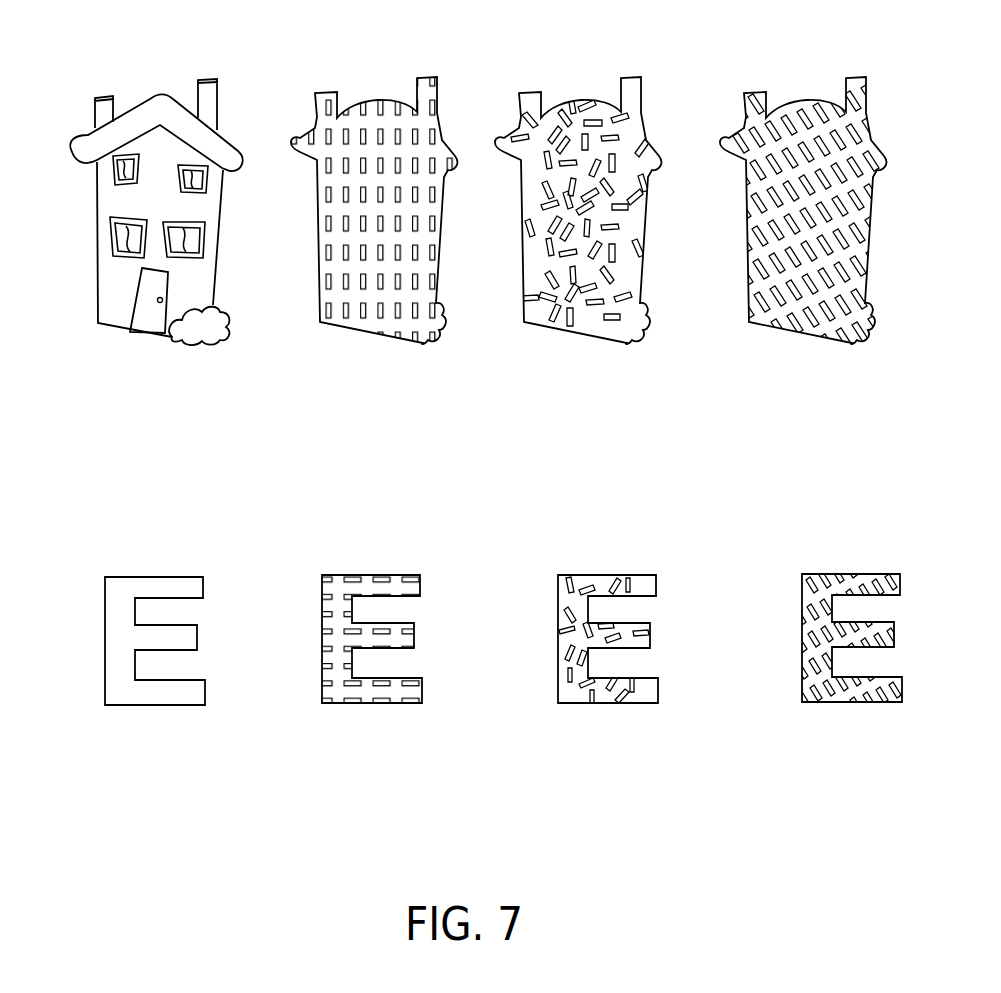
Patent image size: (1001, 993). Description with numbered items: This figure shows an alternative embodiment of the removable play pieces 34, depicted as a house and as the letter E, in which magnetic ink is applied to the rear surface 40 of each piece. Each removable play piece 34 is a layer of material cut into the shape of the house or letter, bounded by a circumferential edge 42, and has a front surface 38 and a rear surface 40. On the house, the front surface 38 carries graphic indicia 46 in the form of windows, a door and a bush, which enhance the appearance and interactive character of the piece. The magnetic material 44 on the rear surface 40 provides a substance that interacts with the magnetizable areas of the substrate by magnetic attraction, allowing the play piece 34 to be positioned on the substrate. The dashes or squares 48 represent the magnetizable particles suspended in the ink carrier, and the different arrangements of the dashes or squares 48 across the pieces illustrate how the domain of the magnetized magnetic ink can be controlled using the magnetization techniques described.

The removable play piece 34 is at (88, 137).
The front surface 38 is at (116, 290).
The rear surface 40 is at (313, 140).
The circumferential edge 42 is at (153, 96).
The magnetic material 44 is at (378, 120).
The graphic indicia 46 is at (190, 240).
The dashes or squares 48 is at (377, 312).